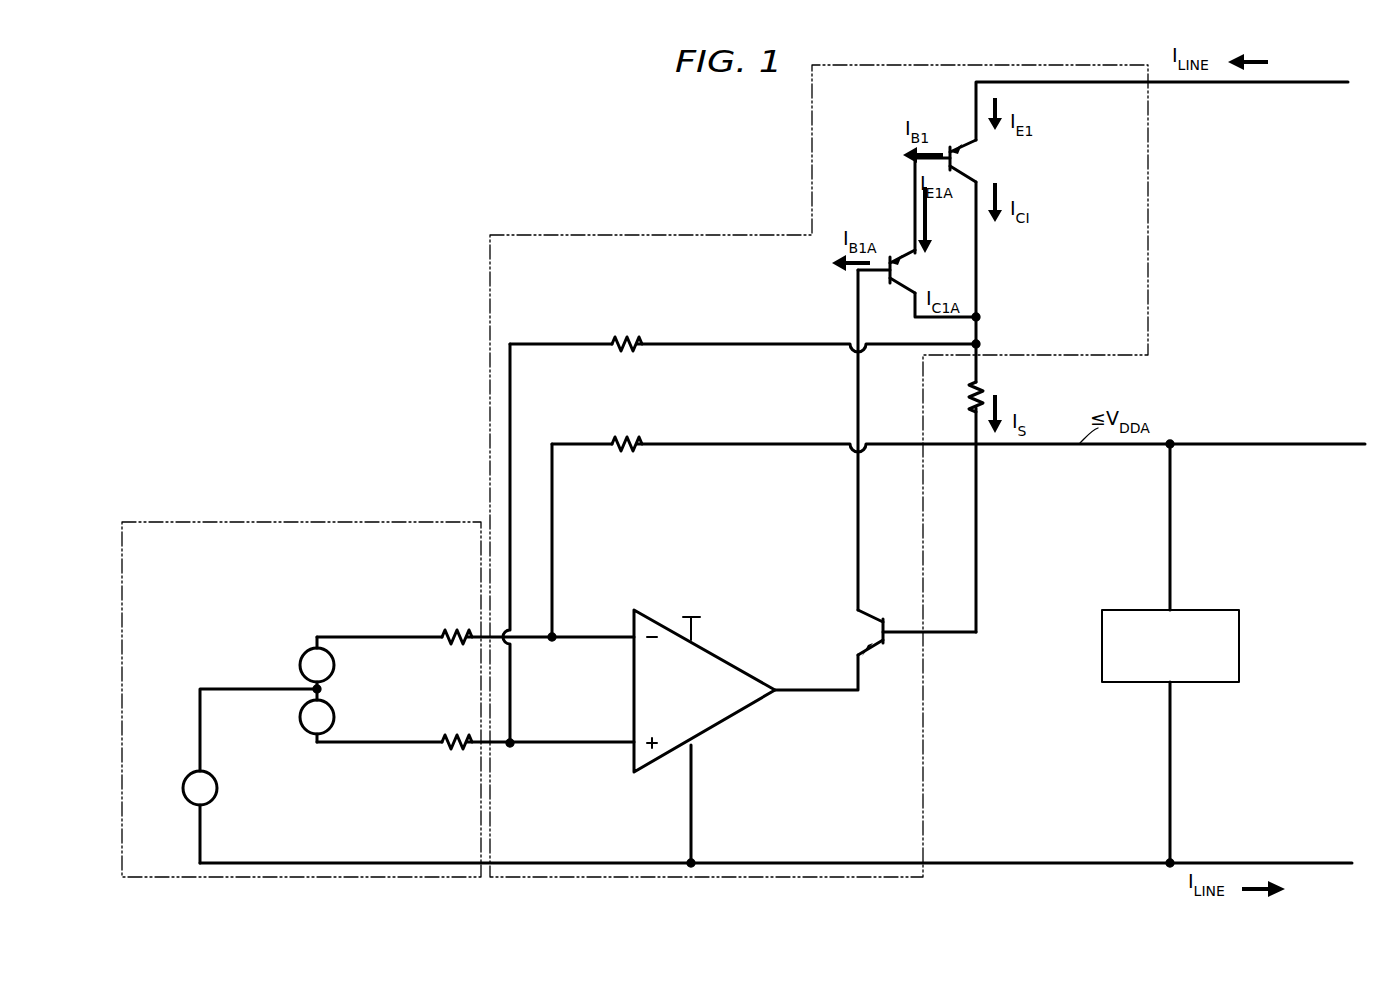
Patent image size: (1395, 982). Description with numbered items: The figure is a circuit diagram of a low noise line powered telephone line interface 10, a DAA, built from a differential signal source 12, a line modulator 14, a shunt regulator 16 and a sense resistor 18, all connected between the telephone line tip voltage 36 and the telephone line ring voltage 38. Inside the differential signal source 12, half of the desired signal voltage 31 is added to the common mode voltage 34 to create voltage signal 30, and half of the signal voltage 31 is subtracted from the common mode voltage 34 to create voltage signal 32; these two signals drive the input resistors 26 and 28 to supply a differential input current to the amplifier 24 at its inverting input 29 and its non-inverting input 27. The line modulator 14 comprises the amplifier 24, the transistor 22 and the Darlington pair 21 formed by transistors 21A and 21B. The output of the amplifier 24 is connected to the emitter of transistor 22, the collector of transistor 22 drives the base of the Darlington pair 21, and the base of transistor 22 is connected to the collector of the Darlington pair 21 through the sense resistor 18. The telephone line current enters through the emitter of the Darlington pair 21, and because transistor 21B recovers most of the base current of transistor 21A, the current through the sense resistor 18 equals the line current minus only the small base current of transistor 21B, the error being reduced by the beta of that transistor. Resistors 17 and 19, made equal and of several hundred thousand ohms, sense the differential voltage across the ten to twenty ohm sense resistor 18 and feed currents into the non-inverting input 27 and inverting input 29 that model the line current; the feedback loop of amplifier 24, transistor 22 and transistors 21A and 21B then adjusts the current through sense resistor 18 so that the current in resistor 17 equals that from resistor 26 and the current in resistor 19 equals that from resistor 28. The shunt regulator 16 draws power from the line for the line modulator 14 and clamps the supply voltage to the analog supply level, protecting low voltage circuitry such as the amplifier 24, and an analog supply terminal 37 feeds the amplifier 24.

The telephone line interface 10 is at (415, 146).
The differential signal source 12 is at (301, 674).
The line modulator 14 is at (819, 471).
The shunt regulator 16 is at (1198, 653).
The resistor 17 is at (743, 352).
The sense resistor 18 is at (989, 488).
The resistor 19 is at (958, 452).
The Darlington pair 21 is at (1101, 213).
The transistor 21A is at (961, 218).
The transistor 21B is at (917, 260).
The transistor 22 is at (894, 463).
The amplifier 24 is at (680, 691).
The input resistor 26 is at (475, 640).
The non-inverting input 27 is at (623, 757).
The input resistor 28 is at (475, 735).
The inverting input 29 is at (624, 623).
The voltage signal 30 is at (324, 651).
The signal voltage 31 is at (260, 705).
The voltage signal 32 is at (324, 743).
The common mode voltage 34 is at (198, 815).
The telephone line tip voltage 36 is at (1366, 108).
The supply terminal VDDA 37 is at (708, 613).
The telephone line ring voltage 38 is at (1376, 831).